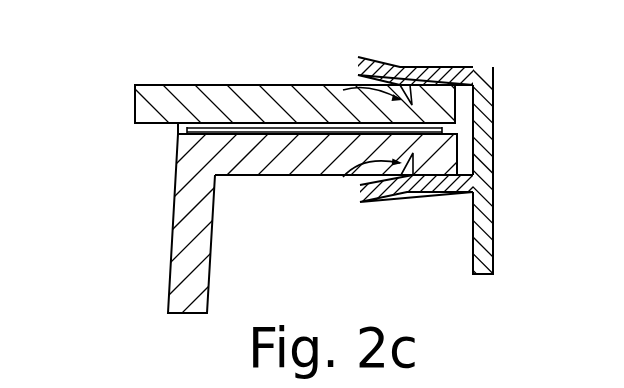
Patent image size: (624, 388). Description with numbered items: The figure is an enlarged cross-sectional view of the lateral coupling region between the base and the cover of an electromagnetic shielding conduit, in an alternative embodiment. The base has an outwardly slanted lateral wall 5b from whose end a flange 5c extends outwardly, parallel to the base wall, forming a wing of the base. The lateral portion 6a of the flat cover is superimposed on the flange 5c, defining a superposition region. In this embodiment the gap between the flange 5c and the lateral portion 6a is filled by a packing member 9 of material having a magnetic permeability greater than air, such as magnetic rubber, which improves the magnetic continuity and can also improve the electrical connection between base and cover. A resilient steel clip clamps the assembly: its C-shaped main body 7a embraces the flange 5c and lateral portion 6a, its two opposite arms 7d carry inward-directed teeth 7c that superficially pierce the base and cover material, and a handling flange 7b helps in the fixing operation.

The lateral portion of cover 6a is at (242, 103).
The packing member 9 is at (183, 130).
The lateral wall 5b is at (190, 244).
The flange 5c is at (275, 163).
The main body 7a is at (493, 130).
The handling flange 7b is at (493, 248).
The tooth 7c is at (343, 88).
The arm 7d is at (475, 68).